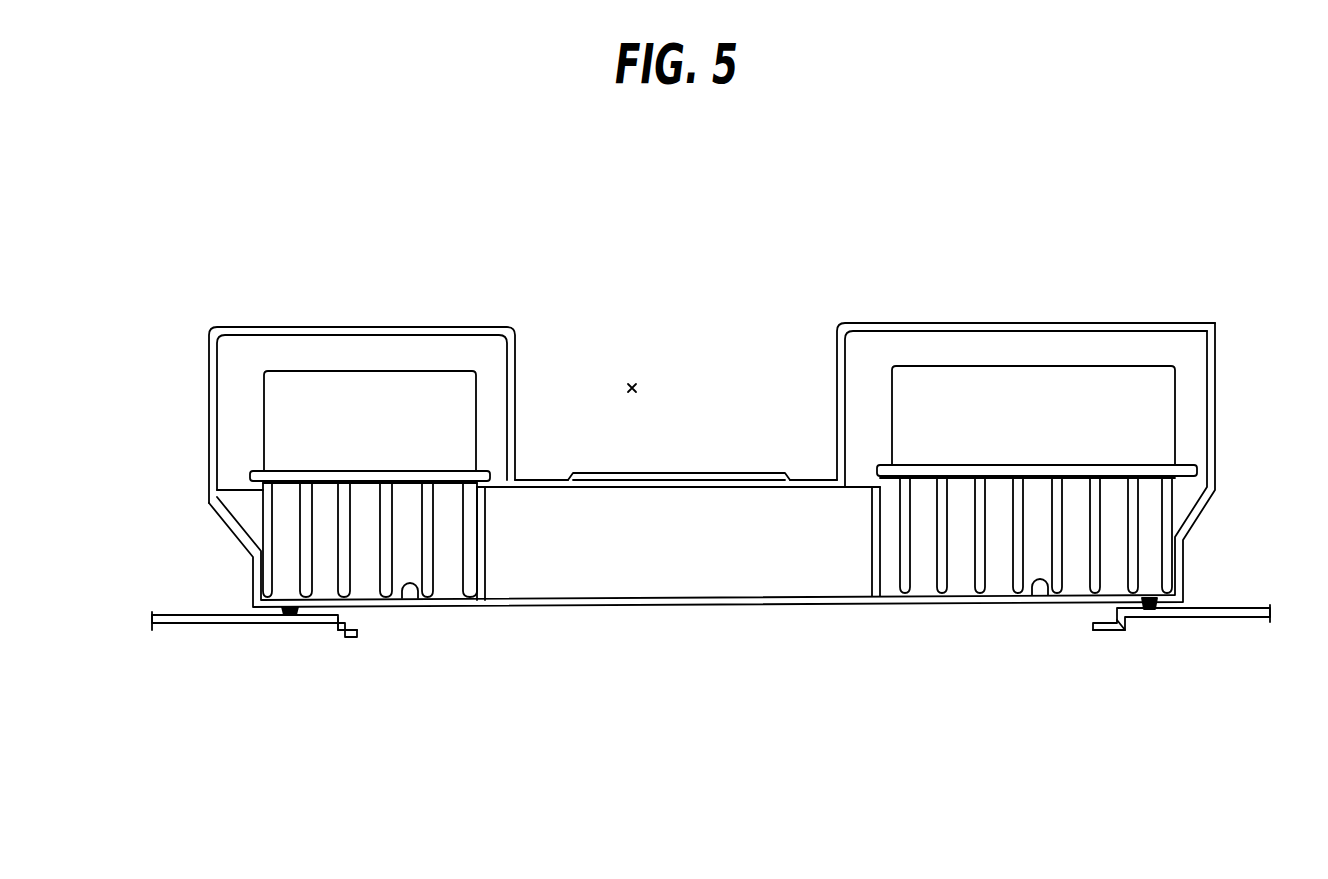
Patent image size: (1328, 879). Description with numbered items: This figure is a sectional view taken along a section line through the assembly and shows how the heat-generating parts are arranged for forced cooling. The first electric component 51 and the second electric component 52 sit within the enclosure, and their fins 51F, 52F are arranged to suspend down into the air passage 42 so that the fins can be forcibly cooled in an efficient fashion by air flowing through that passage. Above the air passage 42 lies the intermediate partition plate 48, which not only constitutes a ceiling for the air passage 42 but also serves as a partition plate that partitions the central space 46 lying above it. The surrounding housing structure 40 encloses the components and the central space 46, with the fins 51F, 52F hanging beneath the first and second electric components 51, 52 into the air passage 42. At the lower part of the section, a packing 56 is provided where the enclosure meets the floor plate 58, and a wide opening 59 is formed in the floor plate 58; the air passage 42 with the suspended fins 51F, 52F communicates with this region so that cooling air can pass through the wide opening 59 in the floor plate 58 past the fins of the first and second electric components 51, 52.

The semiconductor power module housing 40 is at (441, 328).
The air passage 42 is at (409, 584).
The central space 46 is at (632, 384).
The intermediate partition plate 48 is at (810, 476).
The first electric component 51 is at (370, 371).
The fins of the first electric component 51F is at (388, 518).
The second electric component 52 is at (1053, 366).
The fins of the second electric component 52F is at (1017, 537).
The packing 56 is at (280, 608).
The floor plate 58 is at (210, 627).
The wide opening 59 is at (355, 634).